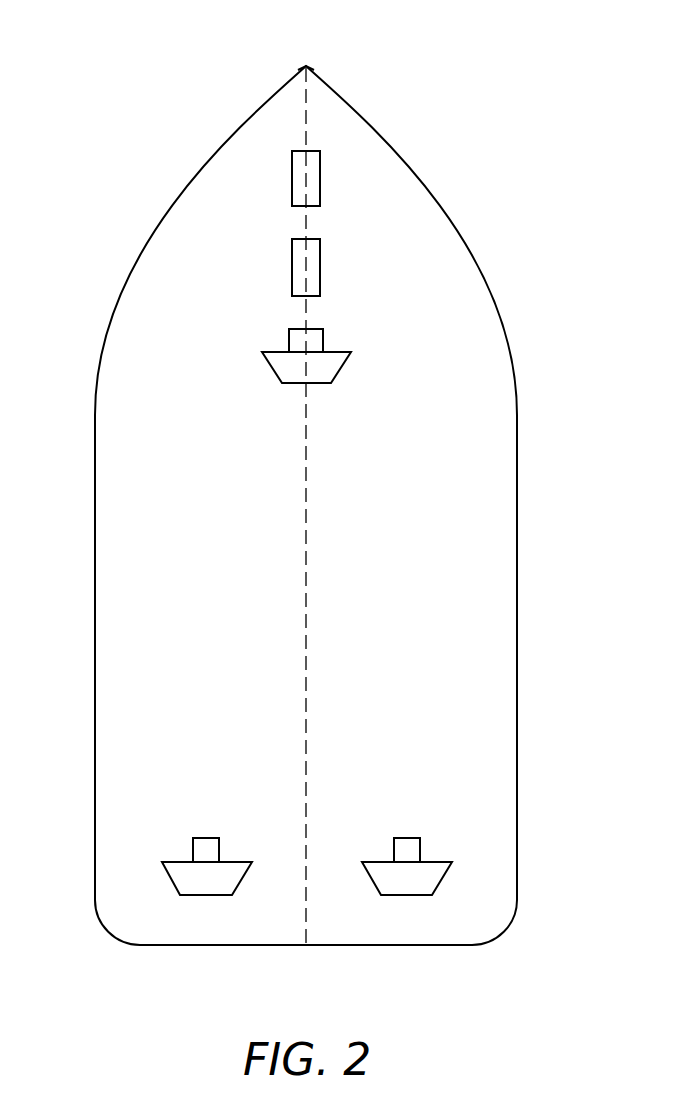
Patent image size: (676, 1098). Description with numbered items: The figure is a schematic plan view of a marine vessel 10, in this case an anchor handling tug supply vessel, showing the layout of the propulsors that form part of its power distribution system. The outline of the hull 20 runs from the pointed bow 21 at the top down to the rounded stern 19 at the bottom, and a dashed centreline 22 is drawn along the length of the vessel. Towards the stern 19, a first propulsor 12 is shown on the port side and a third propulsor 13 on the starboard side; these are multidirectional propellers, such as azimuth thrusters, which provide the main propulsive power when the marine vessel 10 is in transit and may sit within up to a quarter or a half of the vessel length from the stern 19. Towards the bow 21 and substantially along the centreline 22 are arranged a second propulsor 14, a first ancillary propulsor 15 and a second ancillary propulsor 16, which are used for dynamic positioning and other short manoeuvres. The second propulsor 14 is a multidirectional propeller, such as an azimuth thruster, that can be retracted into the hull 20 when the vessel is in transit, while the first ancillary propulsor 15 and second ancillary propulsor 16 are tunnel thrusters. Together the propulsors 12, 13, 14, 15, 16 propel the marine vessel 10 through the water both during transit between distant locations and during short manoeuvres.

The marine vessel 10 is at (96, 164).
The first propulsor 12 is at (172, 884).
The third propulsor 13 is at (440, 883).
The second propulsor 14 is at (340, 372).
The first ancillary propulsor 15 is at (320, 265).
The second ancillary propulsor 16 is at (320, 177).
The stern 19 is at (341, 946).
The hull 20 is at (518, 548).
The bow 21 is at (306, 64).
The centreline 22 is at (304, 583).